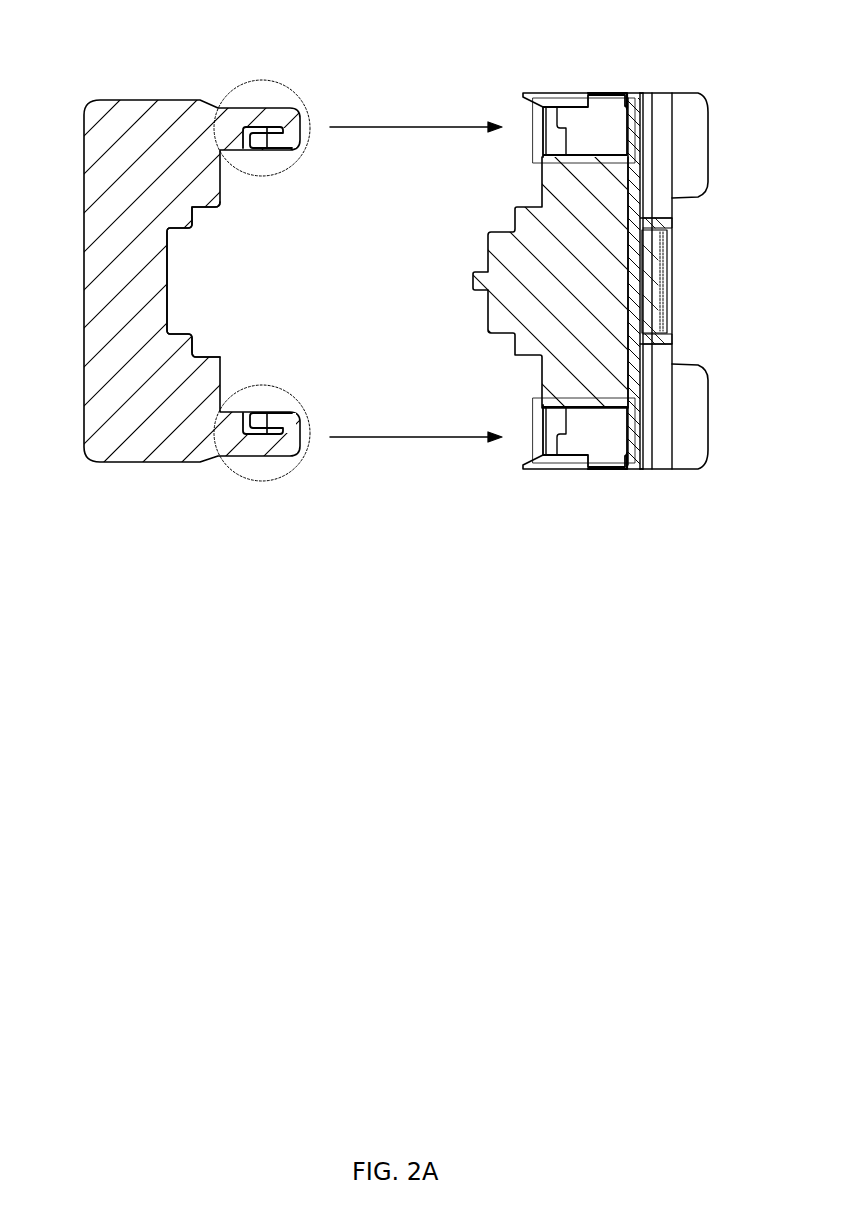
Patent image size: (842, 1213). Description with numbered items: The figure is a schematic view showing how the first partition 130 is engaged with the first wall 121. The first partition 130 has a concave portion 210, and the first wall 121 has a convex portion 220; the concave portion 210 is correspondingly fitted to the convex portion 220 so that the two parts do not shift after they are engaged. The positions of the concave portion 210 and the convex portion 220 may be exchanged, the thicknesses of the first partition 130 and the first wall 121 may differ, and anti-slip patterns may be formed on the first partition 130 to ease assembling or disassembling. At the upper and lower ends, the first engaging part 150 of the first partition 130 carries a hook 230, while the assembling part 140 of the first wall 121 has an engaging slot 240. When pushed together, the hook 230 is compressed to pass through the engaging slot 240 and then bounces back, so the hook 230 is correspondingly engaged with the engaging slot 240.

The first wall 121 is at (670, 60).
The first partition 130 is at (121, 55).
The assembling part 140 is at (530, 115).
The first engaging part 150 is at (262, 80).
The concave portion 210 is at (167, 268).
The convex portion 220 is at (487, 245).
The hook 230 is at (257, 137).
The engaging slot 240 is at (588, 128).